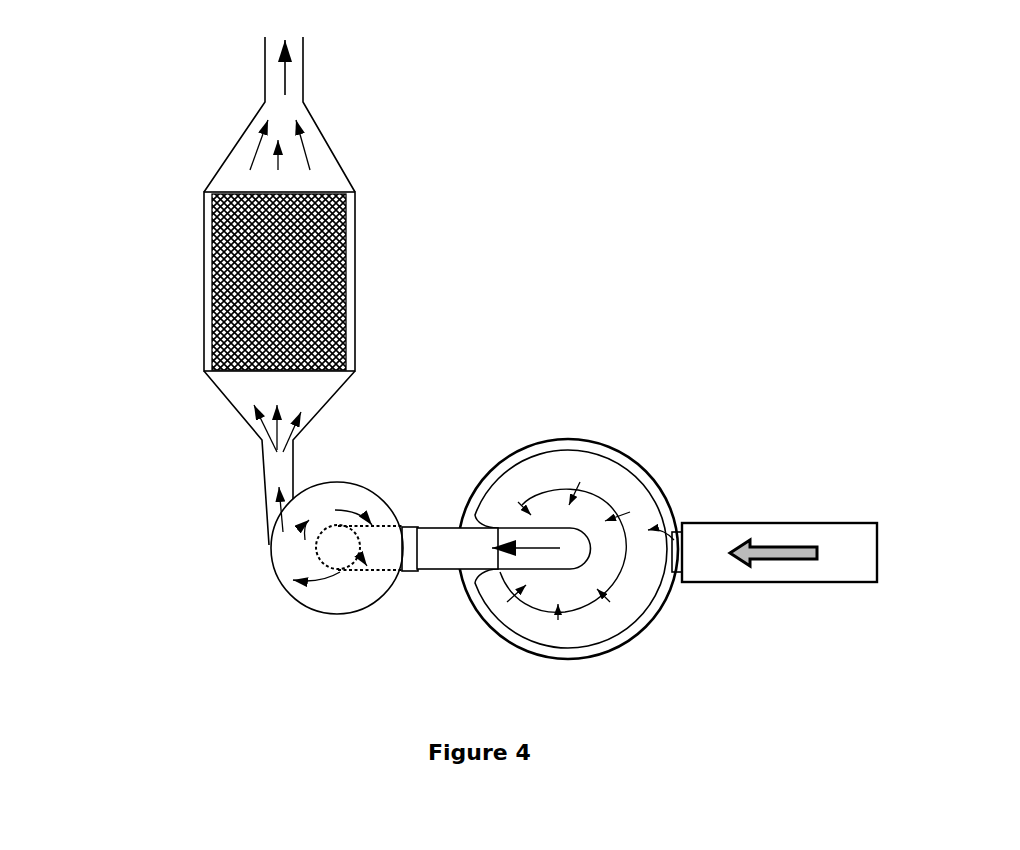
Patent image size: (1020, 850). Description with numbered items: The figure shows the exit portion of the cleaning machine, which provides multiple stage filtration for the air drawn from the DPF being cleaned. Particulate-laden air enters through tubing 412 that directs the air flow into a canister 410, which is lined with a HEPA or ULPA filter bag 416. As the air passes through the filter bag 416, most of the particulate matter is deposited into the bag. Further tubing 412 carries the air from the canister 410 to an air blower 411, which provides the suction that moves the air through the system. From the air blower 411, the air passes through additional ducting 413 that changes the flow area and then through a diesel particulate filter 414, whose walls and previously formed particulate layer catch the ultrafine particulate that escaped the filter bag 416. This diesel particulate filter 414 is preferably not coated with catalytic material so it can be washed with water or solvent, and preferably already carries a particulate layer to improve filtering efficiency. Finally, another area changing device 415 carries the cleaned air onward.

The canister 410 is at (545, 668).
The air blower 411 is at (283, 597).
The tubing 412 is at (438, 520).
The ducting 413 is at (220, 400).
The diesel particulate filter 414 is at (190, 253).
The area changing device 415 is at (222, 149).
The filter bag 416 is at (637, 478).